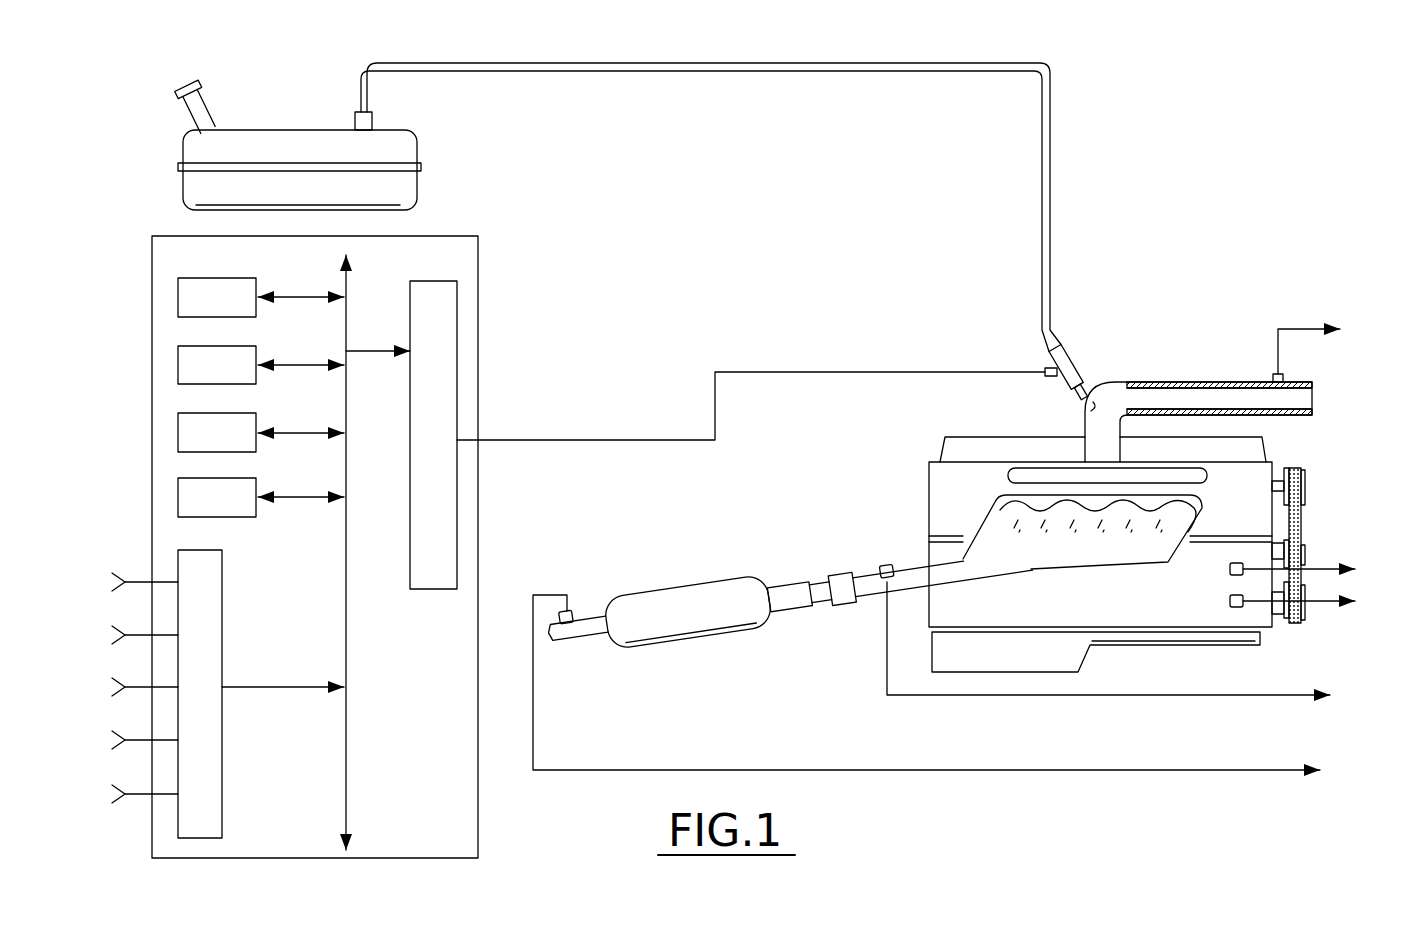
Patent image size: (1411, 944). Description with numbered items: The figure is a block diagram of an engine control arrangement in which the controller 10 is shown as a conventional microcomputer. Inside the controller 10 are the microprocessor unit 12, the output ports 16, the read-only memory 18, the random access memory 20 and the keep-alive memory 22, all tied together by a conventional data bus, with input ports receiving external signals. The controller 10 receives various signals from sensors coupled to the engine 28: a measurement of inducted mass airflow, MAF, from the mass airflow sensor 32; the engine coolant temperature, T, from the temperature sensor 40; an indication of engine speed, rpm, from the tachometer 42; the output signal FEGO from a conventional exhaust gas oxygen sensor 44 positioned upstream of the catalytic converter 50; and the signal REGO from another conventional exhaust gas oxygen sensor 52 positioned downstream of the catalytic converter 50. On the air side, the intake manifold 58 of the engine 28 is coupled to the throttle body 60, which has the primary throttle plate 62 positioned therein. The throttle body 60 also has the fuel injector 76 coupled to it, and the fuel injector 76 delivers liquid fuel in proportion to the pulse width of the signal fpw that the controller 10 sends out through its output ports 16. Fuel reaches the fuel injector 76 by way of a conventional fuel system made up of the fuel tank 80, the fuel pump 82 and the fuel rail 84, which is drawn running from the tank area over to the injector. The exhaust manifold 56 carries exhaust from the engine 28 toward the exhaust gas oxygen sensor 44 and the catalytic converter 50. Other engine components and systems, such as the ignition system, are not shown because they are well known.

The controller 10 is at (150, 242).
The microprocessor unit 12 is at (178, 297).
The output ports 16 is at (457, 291).
The read-only memory 18 is at (178, 353).
The random access memory 20 is at (178, 425).
The keep-alive memory 22 is at (178, 484).
The engine 28 is at (1342, 456).
The mass airflow sensor 32 is at (1268, 375).
The temperature sensor 40 is at (1230, 569).
The tachometer 42 is at (1230, 601).
The exhaust gas oxygen sensor 44 is at (887, 578).
The catalytic converter 50 is at (702, 588).
The exhaust gas oxygen sensor 52 is at (580, 612).
The exhaust manifold 56 is at (1126, 566).
The intake manifold 58 is at (985, 427).
The throttle body 60 is at (1100, 378).
The primary throttle plate 62 is at (1177, 397).
The fuel injector 76 is at (1050, 350).
The fuel tank 80 is at (286, 100).
The fuel pump 82 is at (372, 118).
The fuel rail 84 is at (1053, 118).